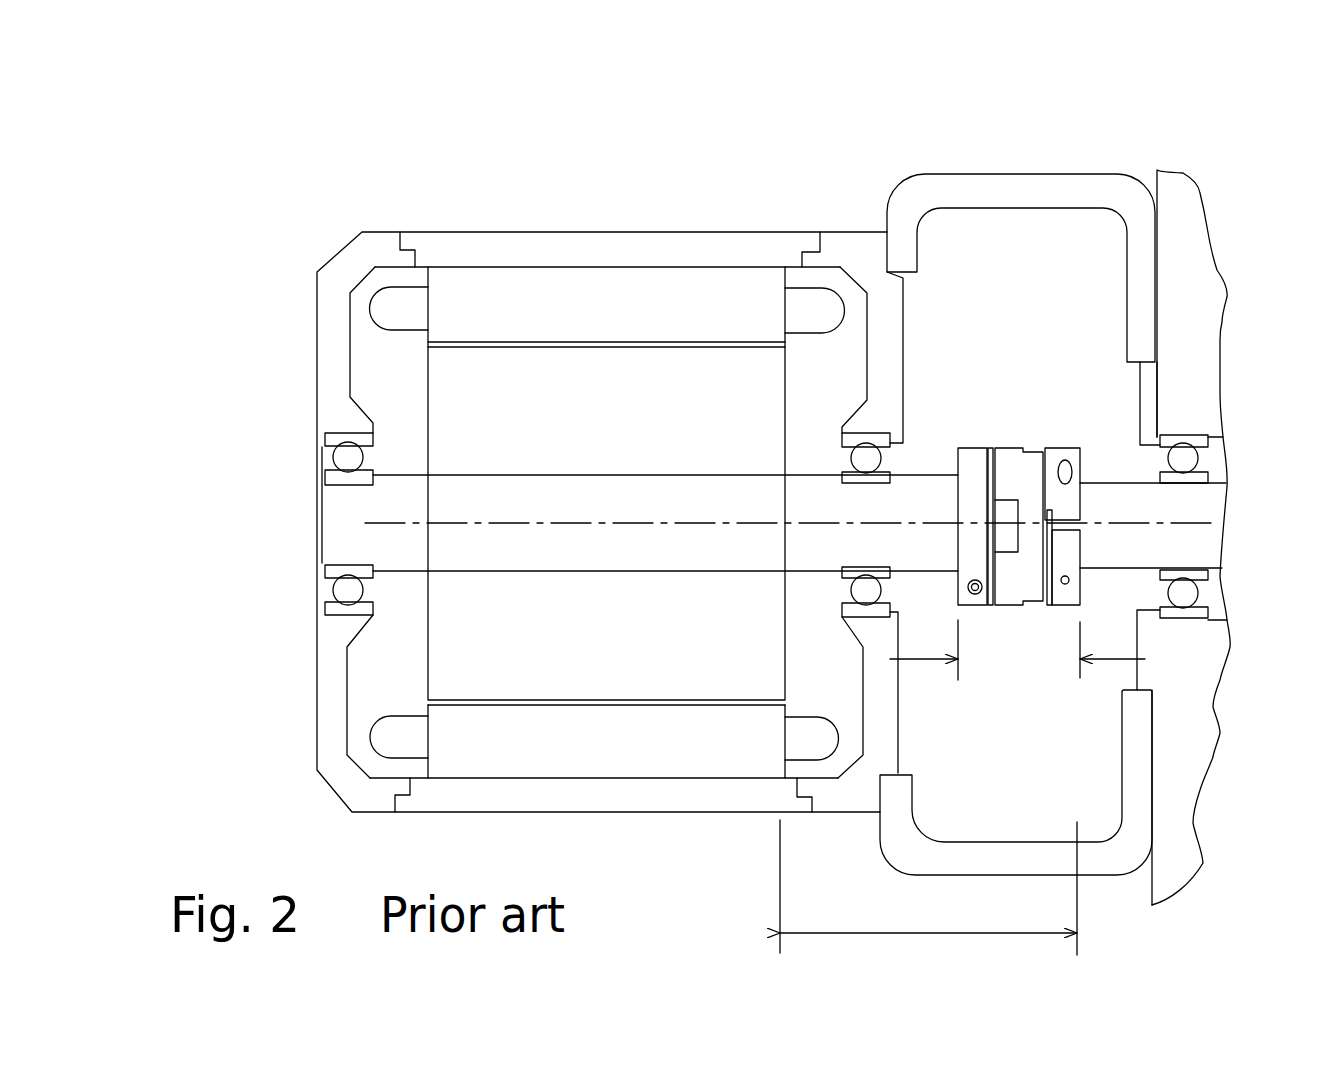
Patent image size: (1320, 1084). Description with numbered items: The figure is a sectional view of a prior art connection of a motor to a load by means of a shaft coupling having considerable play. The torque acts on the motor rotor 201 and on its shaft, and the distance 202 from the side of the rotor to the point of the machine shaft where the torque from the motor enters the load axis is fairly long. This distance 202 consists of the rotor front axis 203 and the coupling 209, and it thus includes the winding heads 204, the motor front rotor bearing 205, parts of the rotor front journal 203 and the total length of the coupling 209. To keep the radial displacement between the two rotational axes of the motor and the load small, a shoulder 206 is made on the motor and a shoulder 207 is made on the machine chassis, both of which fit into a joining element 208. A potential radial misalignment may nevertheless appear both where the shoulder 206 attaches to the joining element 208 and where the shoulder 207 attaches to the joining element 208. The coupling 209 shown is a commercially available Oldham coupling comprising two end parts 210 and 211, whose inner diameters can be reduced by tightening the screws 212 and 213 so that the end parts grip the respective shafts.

The motor rotor 201 is at (448, 434).
The distance 202 is at (928, 887).
The rotor front axis 203 is at (888, 497).
The winding heads 204 is at (798, 307).
The motor front rotor bearing 205 is at (602, 522).
The shoulder 206 is at (882, 377).
The shoulder 207 is at (1173, 362).
The joining element 208 is at (970, 197).
The coupling 209 is at (1017, 650).
The end part 210 is at (1073, 448).
The end part 211 is at (1002, 532).
The screw 212 is at (1066, 468).
The screw 213 is at (975, 594).